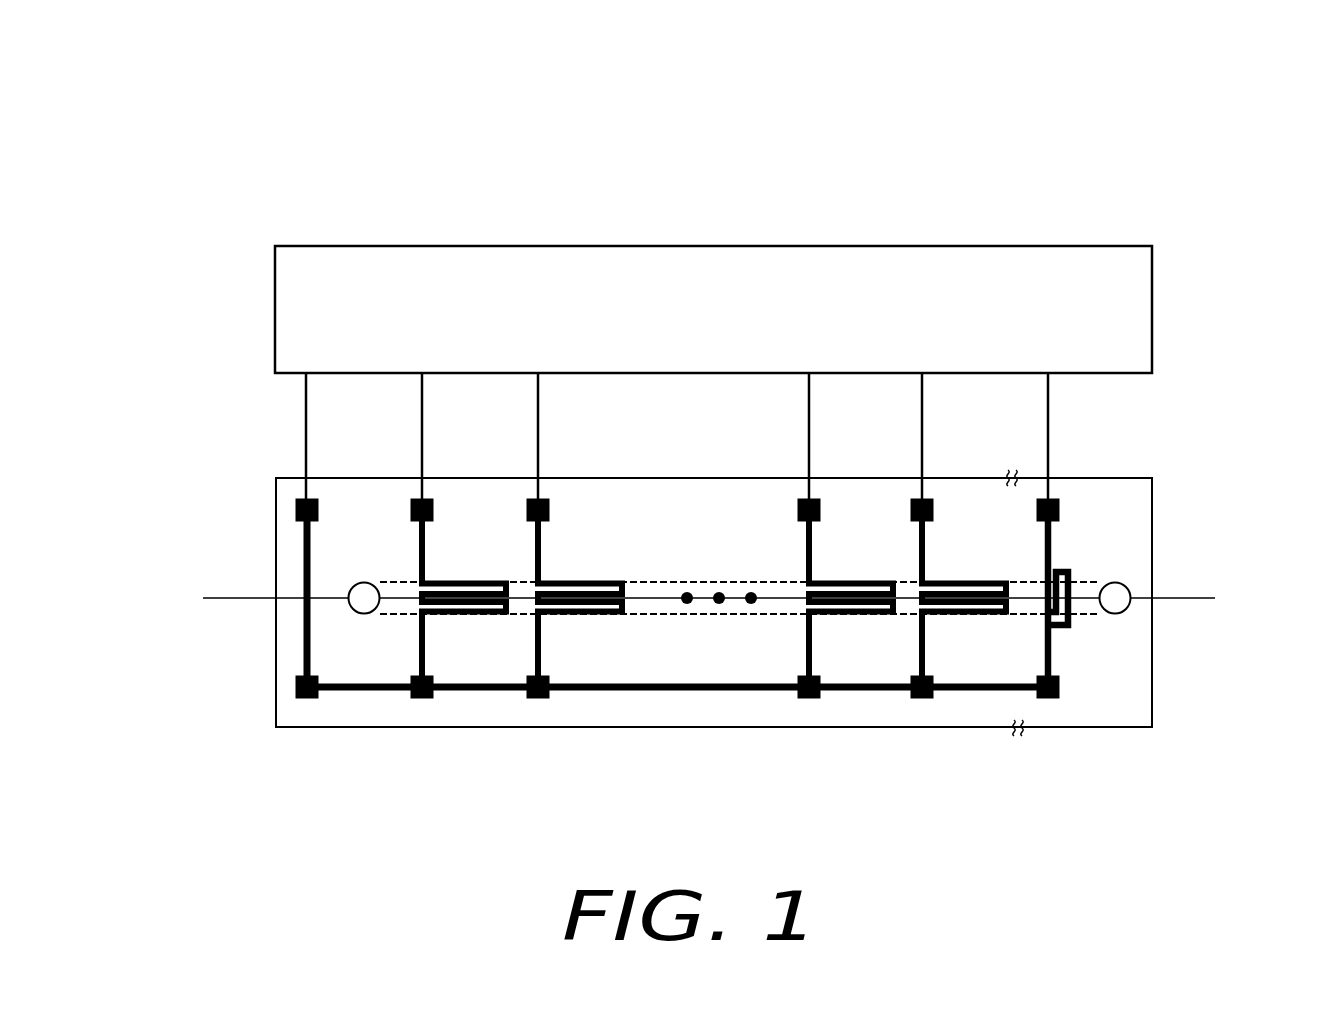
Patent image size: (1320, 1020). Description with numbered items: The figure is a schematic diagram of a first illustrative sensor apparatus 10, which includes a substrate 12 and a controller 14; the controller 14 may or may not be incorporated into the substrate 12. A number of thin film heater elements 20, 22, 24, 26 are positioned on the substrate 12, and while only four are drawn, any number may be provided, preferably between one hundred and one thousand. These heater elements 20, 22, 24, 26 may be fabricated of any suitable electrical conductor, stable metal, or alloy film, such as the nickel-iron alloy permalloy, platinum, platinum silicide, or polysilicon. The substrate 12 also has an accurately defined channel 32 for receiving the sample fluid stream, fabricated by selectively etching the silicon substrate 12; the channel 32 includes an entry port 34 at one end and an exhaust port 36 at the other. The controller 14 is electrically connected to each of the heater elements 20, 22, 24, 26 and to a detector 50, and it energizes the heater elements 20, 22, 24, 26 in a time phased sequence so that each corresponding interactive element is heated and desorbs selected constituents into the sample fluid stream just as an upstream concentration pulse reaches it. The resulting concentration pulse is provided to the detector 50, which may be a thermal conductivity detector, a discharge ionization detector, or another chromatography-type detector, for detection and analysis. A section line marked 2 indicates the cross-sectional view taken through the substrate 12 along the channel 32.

The sensor apparatus 10 is at (1203, 138).
The substrate 12 is at (1152, 493).
The controller 14 is at (1078, 246).
The heater element 20 is at (477, 618).
The heater element 22 is at (613, 618).
The heater element 24 is at (862, 618).
The heater element 26 is at (987, 618).
The channel 32 is at (696, 613).
The entry port 34 is at (352, 587).
The exhaust port 36 is at (1127, 608).
The detector 50 is at (1068, 569).
The section line 2- 2 is at (203, 598).